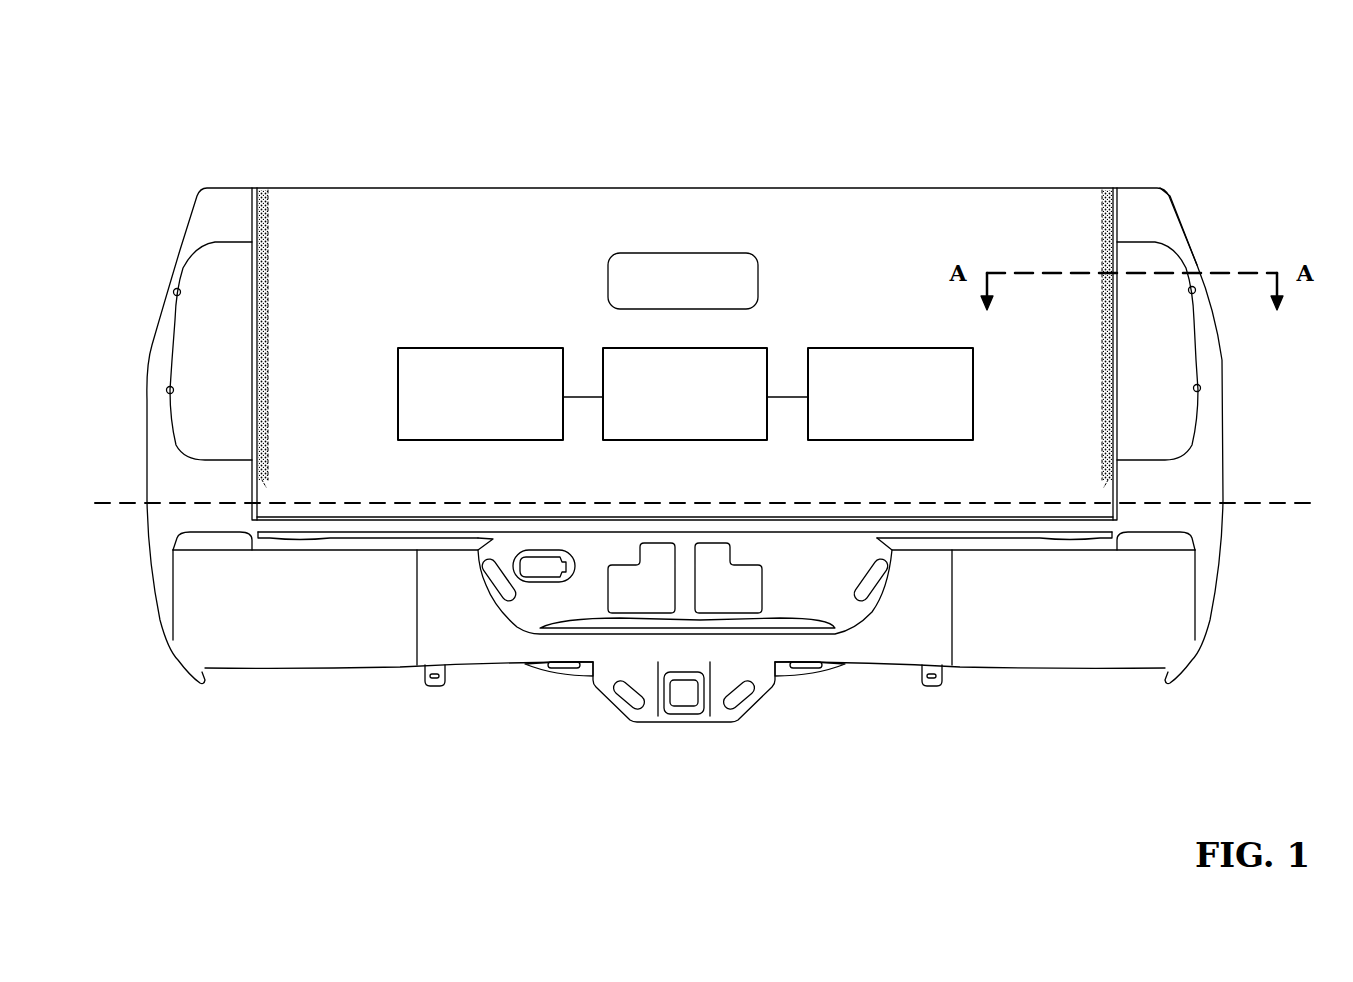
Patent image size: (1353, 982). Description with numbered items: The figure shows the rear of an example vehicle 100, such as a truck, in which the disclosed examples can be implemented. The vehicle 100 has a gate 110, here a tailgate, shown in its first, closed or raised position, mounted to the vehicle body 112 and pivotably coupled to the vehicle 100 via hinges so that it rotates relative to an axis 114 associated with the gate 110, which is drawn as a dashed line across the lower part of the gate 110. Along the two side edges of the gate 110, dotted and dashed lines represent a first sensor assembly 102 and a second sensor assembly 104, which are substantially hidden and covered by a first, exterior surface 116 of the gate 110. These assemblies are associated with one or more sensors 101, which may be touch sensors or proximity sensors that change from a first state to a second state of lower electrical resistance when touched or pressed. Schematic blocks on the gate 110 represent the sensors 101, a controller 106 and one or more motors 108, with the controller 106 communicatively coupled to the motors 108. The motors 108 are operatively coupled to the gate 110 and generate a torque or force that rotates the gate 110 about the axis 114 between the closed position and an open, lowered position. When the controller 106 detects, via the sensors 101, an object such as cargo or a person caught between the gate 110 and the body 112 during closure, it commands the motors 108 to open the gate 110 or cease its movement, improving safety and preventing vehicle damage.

The vehicle 100 is at (1222, 116).
The sensors 101 is at (871, 419).
The first sensor assembly 102 is at (1103, 213).
The second sensor assembly 104 is at (272, 213).
The controller 106 is at (666, 419).
The motors 108 is at (461, 419).
The gate 110 is at (518, 187).
The body 112 is at (1177, 209).
The axis 114 is at (124, 502).
The first surface 116 is at (432, 282).